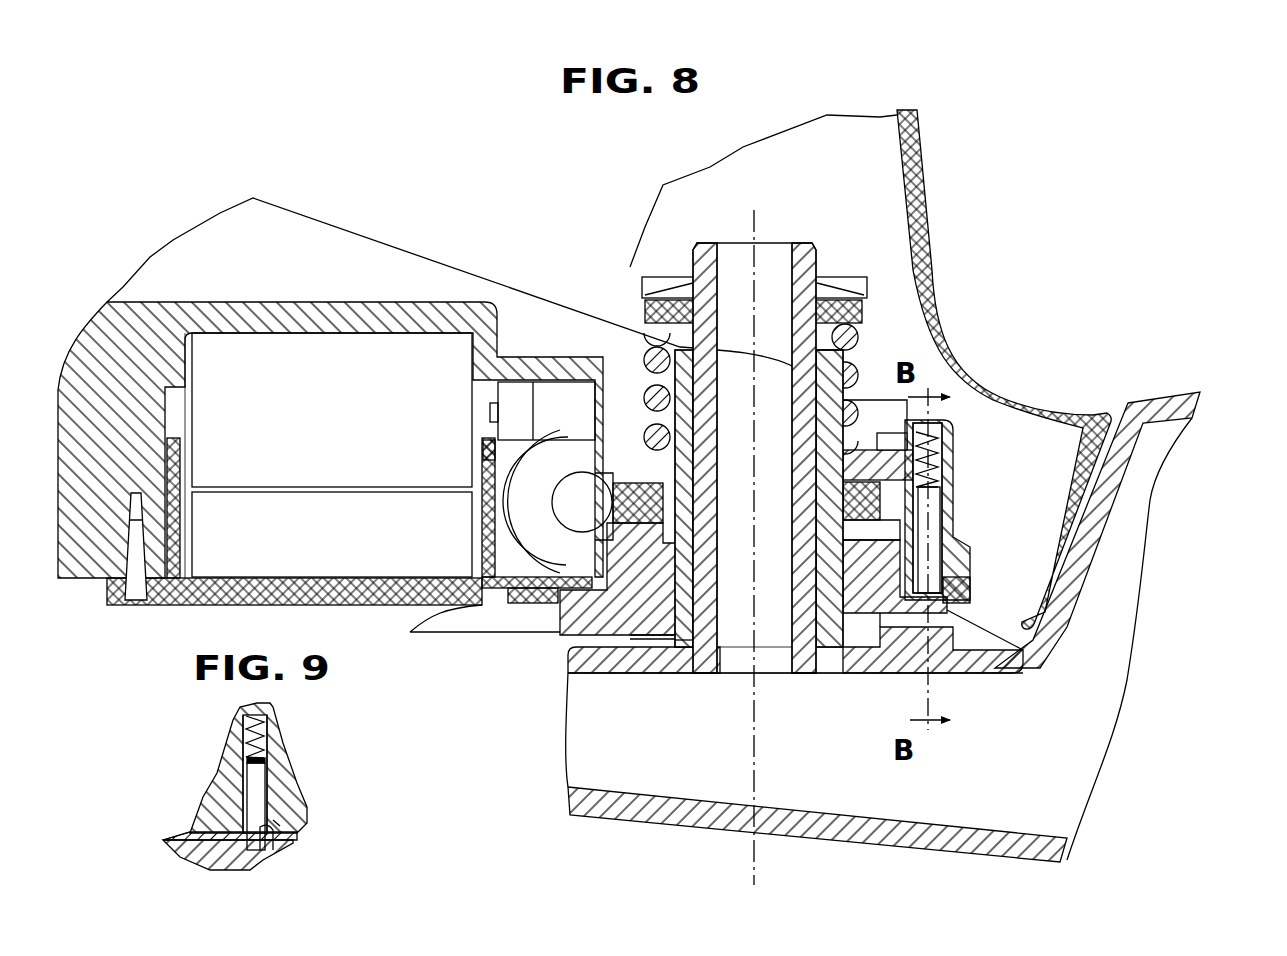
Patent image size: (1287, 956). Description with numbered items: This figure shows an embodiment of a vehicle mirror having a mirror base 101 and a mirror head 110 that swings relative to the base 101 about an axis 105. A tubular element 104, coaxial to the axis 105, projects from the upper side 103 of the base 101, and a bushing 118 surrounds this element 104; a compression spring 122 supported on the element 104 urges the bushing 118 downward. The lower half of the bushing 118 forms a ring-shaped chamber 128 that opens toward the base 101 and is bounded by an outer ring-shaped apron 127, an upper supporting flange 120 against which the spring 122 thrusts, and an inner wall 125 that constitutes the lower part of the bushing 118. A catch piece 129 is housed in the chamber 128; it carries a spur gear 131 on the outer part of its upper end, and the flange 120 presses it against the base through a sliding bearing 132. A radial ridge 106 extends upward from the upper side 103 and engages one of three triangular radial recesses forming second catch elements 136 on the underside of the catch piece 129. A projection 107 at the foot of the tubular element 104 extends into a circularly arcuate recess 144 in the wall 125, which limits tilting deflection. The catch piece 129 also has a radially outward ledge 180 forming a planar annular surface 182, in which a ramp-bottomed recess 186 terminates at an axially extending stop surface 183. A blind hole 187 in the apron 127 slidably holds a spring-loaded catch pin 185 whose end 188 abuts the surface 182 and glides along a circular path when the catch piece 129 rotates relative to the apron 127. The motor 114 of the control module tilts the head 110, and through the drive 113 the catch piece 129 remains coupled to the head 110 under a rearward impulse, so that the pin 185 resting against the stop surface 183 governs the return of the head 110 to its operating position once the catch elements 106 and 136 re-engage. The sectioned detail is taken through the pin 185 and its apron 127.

In FIG. 8, the mirror base 101 is at (1110, 758).
In FIG. 8, the upper side of the base 103 is at (682, 643).
In FIG. 8, the tubular element 104 is at (800, 255).
In FIG. 8, the axis 105 is at (757, 780).
In FIG. 8, the radial ridge 106 is at (940, 637).
In FIG. 8, the projection 107 is at (830, 617).
In FIG. 8, the mirror head 110 is at (372, 232).
In FIG. 8, the drive 113 is at (553, 383).
In FIG. 8, the motor 114 is at (213, 353).
In FIG. 8, the bushing 118 is at (672, 345).
In FIG. 8, the upper supporting flange 120 is at (957, 437).
In FIG. 8, the compression spring 122 is at (850, 345).
In FIG. 8, the inner wall 125 is at (682, 615).
In FIG. 8, the ring-shaped apron 127 is at (952, 552).
In FIG. 9, the ring-shaped apron 127 is at (293, 793).
In FIG. 8, the ring-shaped chamber 128 is at (913, 483).
In FIG. 8, the catch piece 129 is at (617, 617).
In FIG. 9, the catch piece 129 is at (180, 848).
In FIG. 8, the spur gear 131 is at (605, 522).
In FIG. 8, the sliding bearing 132 is at (873, 445).
In FIG. 8, the second catch element 136 is at (905, 620).
In FIG. 8, the recess 144 is at (793, 613).
In FIG. 8, the ledge 180 is at (580, 625).
In FIG. 8, the planar annular surface 182 is at (523, 567).
In FIG. 9, the planar annular surface 182 is at (173, 837).
In FIG. 9, the stop surface 183 is at (273, 845).
In FIG. 8, the catch pin 185 is at (933, 533).
In FIG. 9, the catch pin 185 is at (263, 773).
In FIG. 9, the recess 186 is at (197, 860).
In FIG. 9, the blind hole 187 is at (267, 718).
In FIG. 9, the end of pin 188 is at (270, 813).